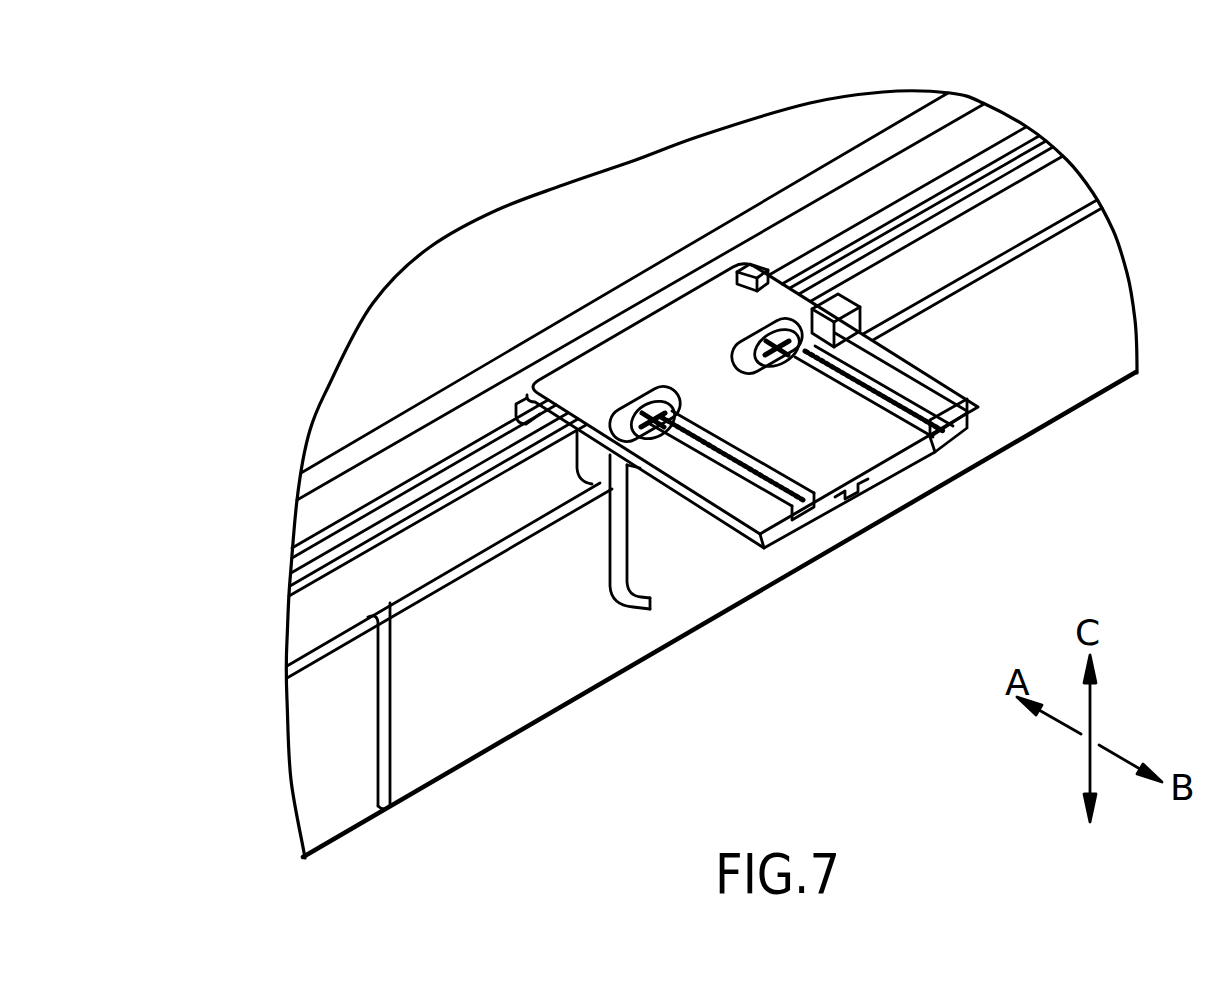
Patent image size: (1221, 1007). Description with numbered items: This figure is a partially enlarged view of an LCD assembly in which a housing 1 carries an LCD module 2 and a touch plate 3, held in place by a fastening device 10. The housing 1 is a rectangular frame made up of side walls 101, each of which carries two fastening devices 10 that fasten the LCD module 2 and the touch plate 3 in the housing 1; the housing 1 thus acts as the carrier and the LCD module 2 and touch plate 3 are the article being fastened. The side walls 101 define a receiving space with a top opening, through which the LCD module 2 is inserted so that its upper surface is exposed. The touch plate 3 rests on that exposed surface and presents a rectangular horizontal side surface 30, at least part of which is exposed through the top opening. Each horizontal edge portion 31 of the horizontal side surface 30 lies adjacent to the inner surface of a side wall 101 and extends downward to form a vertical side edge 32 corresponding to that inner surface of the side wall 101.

The housing 1 is at (570, 705).
The LCD module 2 is at (985, 238).
The touch plate 3 is at (324, 562).
The fastening device 10 is at (840, 517).
The side wall 101 is at (1013, 393).
The horizontal side surface 30 is at (505, 400).
The horizontal edge portion 31 is at (762, 273).
The vertical side edge 32 is at (522, 405).